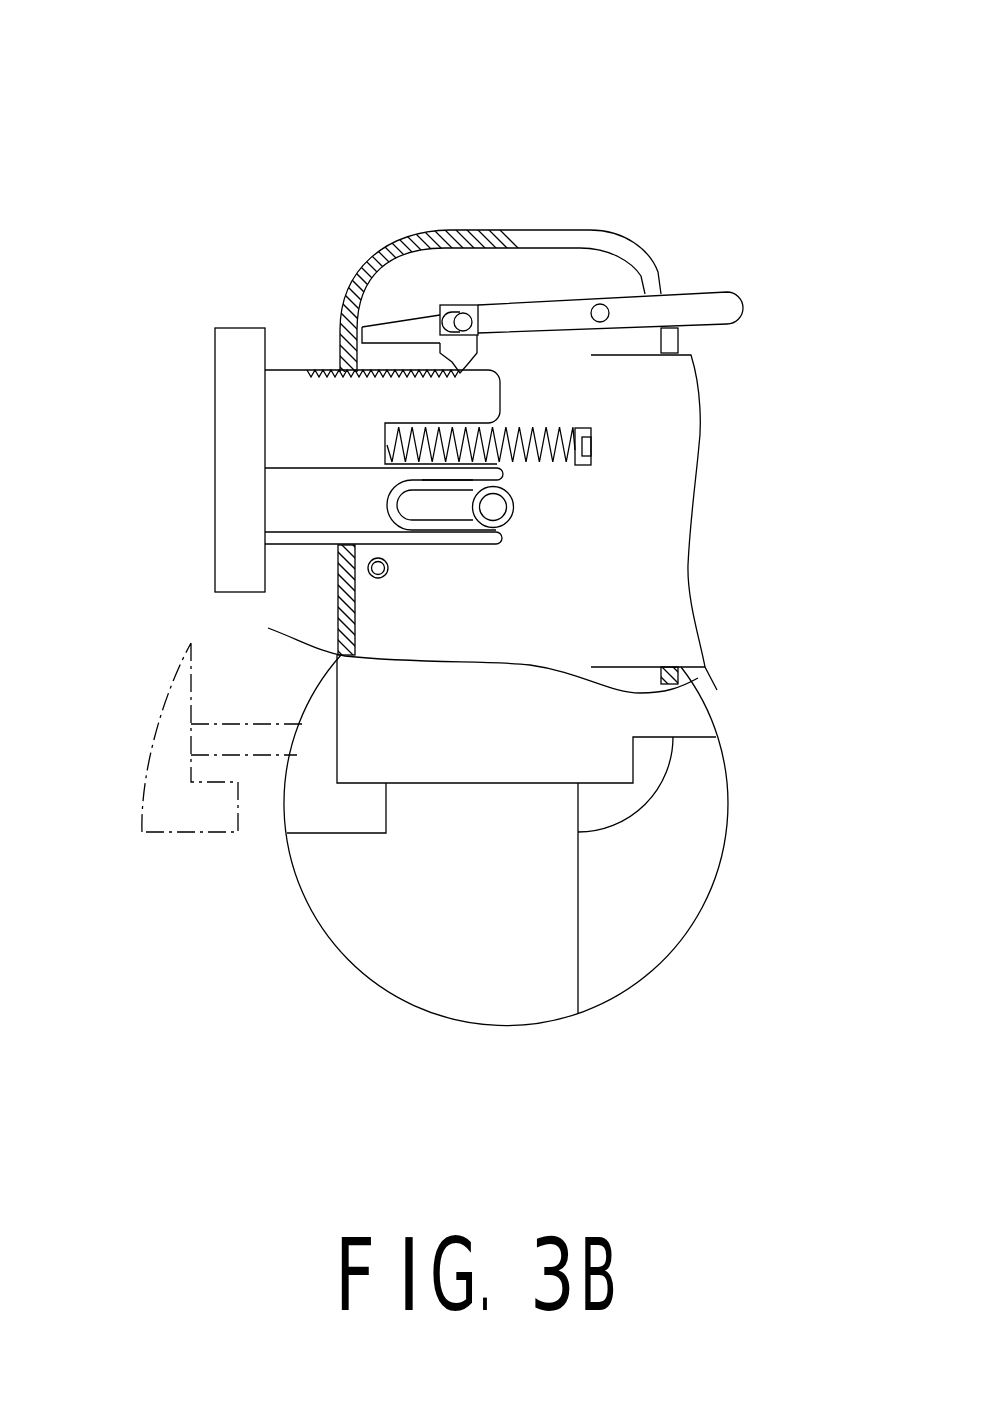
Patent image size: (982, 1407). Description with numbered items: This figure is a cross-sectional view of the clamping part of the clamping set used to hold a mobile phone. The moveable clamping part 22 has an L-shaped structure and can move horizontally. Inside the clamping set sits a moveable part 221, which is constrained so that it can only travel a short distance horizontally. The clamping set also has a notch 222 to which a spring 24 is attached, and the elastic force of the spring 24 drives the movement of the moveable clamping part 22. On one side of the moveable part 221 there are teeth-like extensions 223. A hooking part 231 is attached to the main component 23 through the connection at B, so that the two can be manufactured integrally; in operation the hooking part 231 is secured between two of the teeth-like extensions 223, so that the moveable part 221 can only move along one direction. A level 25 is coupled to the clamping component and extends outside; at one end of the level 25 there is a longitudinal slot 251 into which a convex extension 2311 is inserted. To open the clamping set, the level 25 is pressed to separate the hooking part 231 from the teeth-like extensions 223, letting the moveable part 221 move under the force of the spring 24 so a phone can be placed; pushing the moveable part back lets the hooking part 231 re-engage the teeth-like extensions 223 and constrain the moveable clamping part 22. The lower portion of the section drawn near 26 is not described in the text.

The moveable clamping part 22 is at (240, 437).
The moveable part 221 is at (417, 407).
The notch 222 is at (477, 455).
The teeth-like extensions 223 is at (383, 372).
The main component 23 is at (443, 234).
The hooking part 231 is at (412, 328).
The convex extension 2311 is at (484, 312).
The spring 24 is at (577, 447).
The level 25 is at (720, 306).
The longitudinal slot 251 is at (445, 305).
The base step 26 is at (317, 818).
The connection B is at (360, 343).